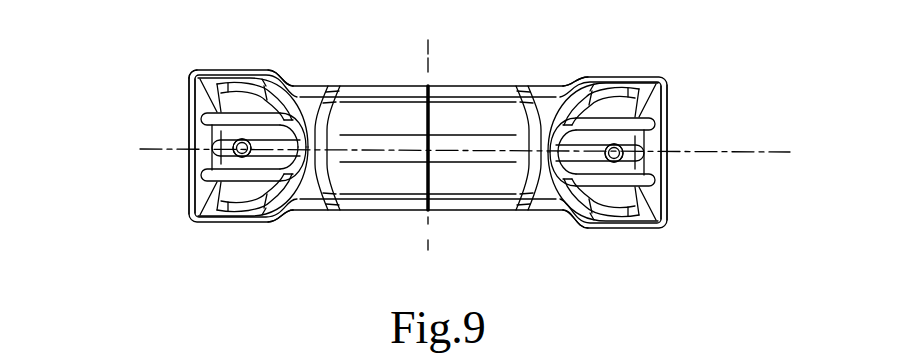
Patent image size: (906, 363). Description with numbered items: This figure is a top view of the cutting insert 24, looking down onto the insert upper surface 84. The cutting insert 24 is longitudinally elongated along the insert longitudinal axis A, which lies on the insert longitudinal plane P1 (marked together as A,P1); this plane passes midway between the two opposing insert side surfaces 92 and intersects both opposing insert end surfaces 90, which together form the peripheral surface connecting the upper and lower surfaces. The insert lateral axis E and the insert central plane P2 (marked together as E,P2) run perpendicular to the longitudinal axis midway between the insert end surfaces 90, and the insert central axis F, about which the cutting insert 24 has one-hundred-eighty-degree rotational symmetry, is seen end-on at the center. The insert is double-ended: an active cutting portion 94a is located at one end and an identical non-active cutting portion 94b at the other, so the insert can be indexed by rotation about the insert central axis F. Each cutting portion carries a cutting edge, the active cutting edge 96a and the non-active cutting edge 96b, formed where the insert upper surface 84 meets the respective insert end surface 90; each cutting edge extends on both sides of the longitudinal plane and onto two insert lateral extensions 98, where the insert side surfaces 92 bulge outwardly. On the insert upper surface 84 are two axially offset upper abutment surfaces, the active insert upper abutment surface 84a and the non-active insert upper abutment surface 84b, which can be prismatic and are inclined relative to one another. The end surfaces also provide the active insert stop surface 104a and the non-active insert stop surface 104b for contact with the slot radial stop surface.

The cutting insert 24 is at (180, 48).
The insert upper surface 84 is at (385, 109).
The active insert upper abutment surface 84a is at (372, 190).
The non-active insert upper abutment surface 84b is at (490, 183).
The insert end surfaces 90 is at (188, 186).
The insert side surfaces 92 is at (500, 87).
The active cutting portion 94a is at (696, 57).
The non-active cutting portion 94b is at (227, 43).
The active cutting edge 96a is at (668, 115).
The non-active cutting edge 96b is at (189, 114).
The insert lateral extensions 98 is at (260, 48).
The active insert stop surface 104a is at (147, 174).
The non-active insert stop surface 104b is at (701, 173).
The insert lateral axis and insert central plane E,P2 is at (431, 52).
The insert longitudinal axis and insert longitudinal plane A,P1 is at (718, 152).
The insert central axis F is at (432, 152).